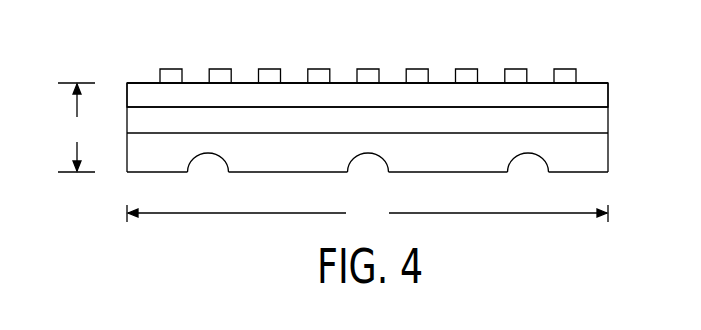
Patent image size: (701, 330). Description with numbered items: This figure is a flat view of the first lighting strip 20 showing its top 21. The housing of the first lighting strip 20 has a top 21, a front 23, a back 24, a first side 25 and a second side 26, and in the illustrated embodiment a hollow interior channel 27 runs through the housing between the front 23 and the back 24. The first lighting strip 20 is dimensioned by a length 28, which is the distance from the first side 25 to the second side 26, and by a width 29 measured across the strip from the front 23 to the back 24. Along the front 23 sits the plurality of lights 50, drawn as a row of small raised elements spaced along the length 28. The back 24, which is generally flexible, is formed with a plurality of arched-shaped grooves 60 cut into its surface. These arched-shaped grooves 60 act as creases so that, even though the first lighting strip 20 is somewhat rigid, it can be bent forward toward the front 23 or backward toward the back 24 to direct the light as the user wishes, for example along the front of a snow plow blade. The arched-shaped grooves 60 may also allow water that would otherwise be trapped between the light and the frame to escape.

The first lighting strip 20 is at (152, 95).
The top 21 is at (553, 98).
The front 23 is at (392, 82).
The back 24 is at (457, 173).
The first side 25 is at (610, 95).
The second side 26 is at (127, 153).
The hollow interior channel 27 is at (597, 120).
The length 28 is at (367, 217).
The width 29 is at (76, 127).
The plurality of lights 50 is at (318, 68).
The arched-shaped grooves 60 is at (207, 167).